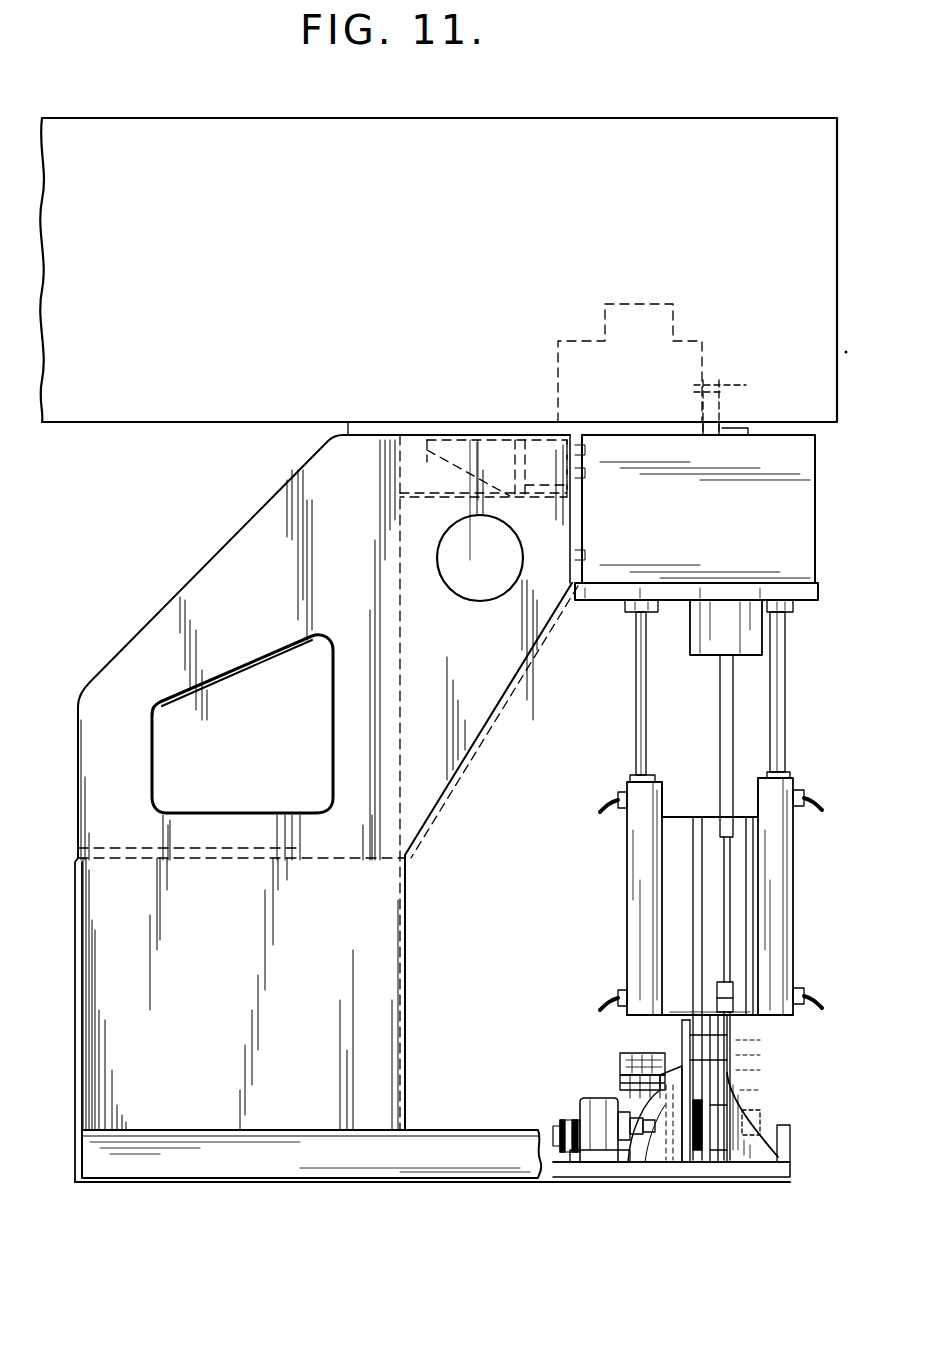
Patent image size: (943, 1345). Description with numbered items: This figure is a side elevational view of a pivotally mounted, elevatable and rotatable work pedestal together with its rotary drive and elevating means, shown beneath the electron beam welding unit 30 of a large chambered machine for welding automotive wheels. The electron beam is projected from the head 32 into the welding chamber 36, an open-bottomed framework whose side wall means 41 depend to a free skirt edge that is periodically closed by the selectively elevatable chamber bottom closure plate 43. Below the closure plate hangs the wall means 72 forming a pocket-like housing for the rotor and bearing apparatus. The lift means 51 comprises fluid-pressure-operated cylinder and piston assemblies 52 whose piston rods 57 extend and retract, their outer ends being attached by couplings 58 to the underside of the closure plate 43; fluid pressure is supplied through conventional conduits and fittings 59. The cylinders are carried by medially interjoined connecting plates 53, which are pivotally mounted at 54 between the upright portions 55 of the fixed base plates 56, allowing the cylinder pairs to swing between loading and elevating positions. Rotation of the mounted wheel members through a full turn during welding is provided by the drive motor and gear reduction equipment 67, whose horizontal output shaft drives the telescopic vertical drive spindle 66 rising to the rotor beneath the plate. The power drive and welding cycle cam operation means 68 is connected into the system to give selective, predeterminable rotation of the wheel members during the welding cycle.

The electron beam welding unit 30 is at (192, 120).
The head 32 is at (684, 342).
The side wall means 41 is at (735, 397).
The welding chamber 36 is at (732, 498).
The chamber bottom closure plate 43 is at (598, 600).
The couplings 58 is at (640, 612).
The piston rods 57 is at (636, 688).
The wall means 72 is at (690, 655).
The vertical drive spindle 66 is at (720, 708).
The lift means 51 is at (602, 856).
The cylinder and piston assemblies 52 is at (627, 898).
The connecting plates 53 is at (693, 942).
The fluid conduits and fittings 59 is at (615, 796).
The upright portions 55 is at (703, 1050).
The fixed base plates 56 is at (752, 1138).
The power drive and welding cycle cam operation means 68 is at (608, 1072).
The drive motor and gear reduction equipment 67 is at (575, 1098).
The pivot mounting 54 is at (697, 1164).